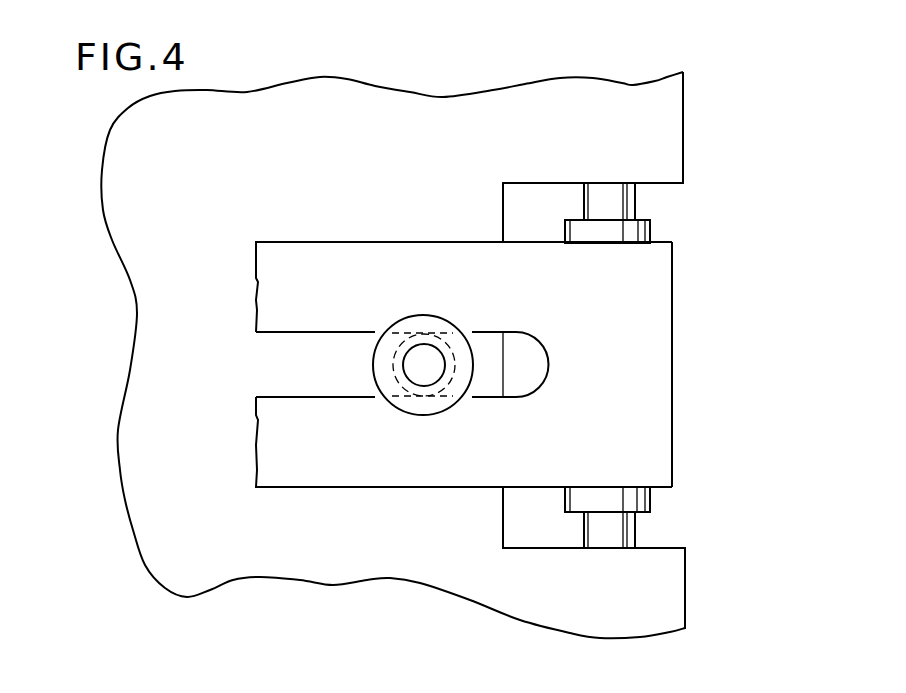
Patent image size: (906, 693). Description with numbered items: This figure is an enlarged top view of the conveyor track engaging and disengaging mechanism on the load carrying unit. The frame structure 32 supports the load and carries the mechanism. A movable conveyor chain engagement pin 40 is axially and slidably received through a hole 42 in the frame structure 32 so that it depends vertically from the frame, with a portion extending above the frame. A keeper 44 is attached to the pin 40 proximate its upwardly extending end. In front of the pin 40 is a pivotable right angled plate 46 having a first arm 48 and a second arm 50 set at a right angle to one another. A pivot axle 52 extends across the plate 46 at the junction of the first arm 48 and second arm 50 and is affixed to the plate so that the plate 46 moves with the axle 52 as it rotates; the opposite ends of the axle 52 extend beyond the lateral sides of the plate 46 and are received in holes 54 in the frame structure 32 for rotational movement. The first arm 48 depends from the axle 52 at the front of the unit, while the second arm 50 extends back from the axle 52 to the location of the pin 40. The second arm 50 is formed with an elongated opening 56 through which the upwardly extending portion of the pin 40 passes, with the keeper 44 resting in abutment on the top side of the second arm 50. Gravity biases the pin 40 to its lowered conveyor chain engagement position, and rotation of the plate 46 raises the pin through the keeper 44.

The frame structure 32 is at (412, 107).
The movable conveyor chain engagement pin 40 is at (412, 355).
The hole 42 is at (410, 390).
The keeper 44 is at (432, 327).
The pivotable right angled plate 46 is at (658, 273).
The first arm 48 is at (673, 327).
The second arm 50 is at (302, 263).
The pivot axle 52 is at (602, 195).
The holes 54 is at (636, 187).
The elongated opening 56 is at (272, 333).